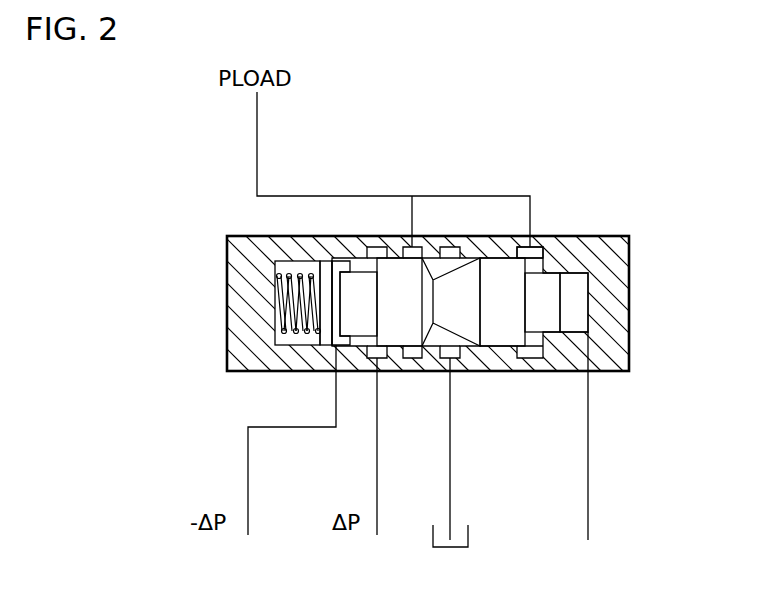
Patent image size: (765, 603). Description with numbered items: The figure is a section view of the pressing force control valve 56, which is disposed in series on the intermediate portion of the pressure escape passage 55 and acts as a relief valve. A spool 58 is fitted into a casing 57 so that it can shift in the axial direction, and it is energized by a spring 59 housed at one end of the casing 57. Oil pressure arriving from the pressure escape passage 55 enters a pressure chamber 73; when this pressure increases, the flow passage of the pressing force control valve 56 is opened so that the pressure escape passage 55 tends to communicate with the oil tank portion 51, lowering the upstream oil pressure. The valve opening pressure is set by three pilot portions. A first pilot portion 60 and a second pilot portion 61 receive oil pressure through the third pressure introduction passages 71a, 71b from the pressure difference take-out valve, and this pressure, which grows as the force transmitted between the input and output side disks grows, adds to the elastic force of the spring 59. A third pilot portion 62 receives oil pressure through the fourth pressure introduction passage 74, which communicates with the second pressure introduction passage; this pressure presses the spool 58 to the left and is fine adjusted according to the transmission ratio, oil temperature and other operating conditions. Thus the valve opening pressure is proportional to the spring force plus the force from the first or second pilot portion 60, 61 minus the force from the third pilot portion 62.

The oil tank portion 51 is at (457, 537).
The pressure escape passage 55 is at (322, 195).
The pressing force control valve 56 is at (583, 236).
The casing 57 is at (610, 312).
The spool 58 is at (513, 287).
The spring 59 is at (298, 330).
The first pilot portion 60 is at (322, 258).
The second pilot portion 61 is at (383, 373).
The third pilot portion 62 is at (572, 320).
The third pressure introduction passage 71a is at (252, 492).
The third pressure introduction passage 71b is at (377, 498).
The pressure chamber 73 is at (515, 247).
The fourth pressure introduction passage 74 is at (590, 443).